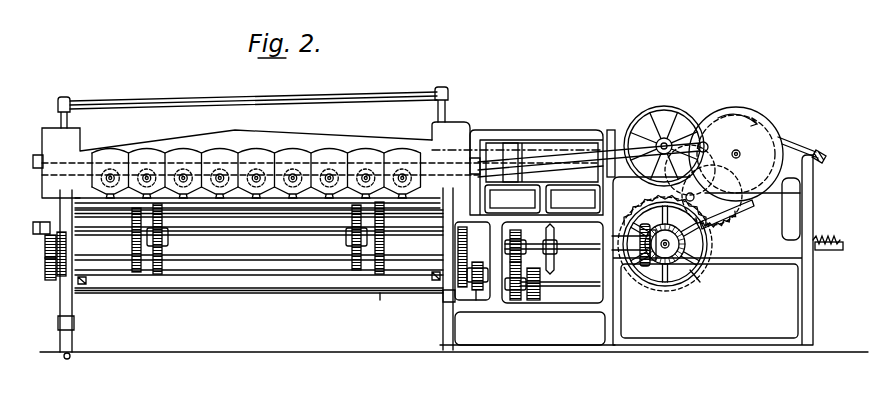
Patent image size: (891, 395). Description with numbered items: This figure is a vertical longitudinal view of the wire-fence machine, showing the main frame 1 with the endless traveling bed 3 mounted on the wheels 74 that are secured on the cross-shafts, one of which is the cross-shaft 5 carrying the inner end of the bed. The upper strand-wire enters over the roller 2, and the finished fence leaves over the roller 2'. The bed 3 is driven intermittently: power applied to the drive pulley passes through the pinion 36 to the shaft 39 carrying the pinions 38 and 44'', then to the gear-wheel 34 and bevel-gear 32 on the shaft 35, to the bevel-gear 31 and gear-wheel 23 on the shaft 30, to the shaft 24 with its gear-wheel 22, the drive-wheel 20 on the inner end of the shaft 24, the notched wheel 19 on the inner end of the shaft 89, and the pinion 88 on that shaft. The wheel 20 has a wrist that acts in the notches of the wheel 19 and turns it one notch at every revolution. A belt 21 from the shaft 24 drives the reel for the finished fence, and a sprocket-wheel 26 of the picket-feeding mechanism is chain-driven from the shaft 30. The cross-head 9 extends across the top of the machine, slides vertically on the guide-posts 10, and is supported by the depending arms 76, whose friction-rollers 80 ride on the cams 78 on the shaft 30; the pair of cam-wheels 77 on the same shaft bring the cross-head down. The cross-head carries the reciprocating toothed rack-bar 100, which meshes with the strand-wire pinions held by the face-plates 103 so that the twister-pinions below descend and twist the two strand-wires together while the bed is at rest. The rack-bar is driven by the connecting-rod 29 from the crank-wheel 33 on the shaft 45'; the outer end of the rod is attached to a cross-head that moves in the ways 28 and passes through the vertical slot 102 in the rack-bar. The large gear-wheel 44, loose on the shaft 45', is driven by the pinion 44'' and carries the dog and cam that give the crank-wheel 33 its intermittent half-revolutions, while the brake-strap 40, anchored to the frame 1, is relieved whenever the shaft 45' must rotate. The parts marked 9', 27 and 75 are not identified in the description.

The main frame 1 is at (74, 323).
The roller 2 is at (259, 209).
The roller 2' is at (253, 106).
The endless traveling bed 3 is at (258, 282).
The cross-shaft 5 is at (243, 240).
The cross-head 9 is at (237, 163).
The hopper frame end 9' is at (451, 141).
The guide-posts 10 is at (70, 120).
The notched wheel 19 is at (478, 269).
The drive-wheel 20 is at (478, 300).
The belt 21 is at (540, 298).
The gear-wheel 22 is at (515, 300).
The gear-wheel 23 is at (522, 237).
The shaft 24 is at (584, 286).
The sprocket-wheel 26 is at (555, 235).
The housing 27 is at (520, 172).
The ways 28 is at (588, 162).
The connecting-rod 29 is at (612, 130).
The shaft 30 is at (673, 119).
The bevel-gear 31 is at (650, 287).
The bevel-gear 32 is at (704, 282).
The crank-wheel 33 is at (736, 154).
The gear-wheel 34 is at (710, 250).
The shaft 35 is at (668, 258).
The pinion 36 is at (664, 143).
The pinion 38 is at (736, 212).
The shaft 39 is at (650, 198).
The brake-strap 40 is at (802, 143).
The gear-wheel 44 is at (774, 217).
The pinion 44'' is at (741, 220).
The shaft 45' is at (737, 119).
The wheels 74 is at (384, 247).
The bearing 75 is at (84, 281).
The depending arms 76 is at (60, 206).
The cam-wheels 77 is at (46, 246).
The cams 78 is at (50, 262).
The friction-rollers 80 is at (68, 245).
The pinion 88 is at (448, 297).
The shaft 89 is at (374, 301).
The rack-bar 100 is at (33, 161).
The vertical slot 102 is at (511, 150).
The face-plates 103 is at (150, 158).